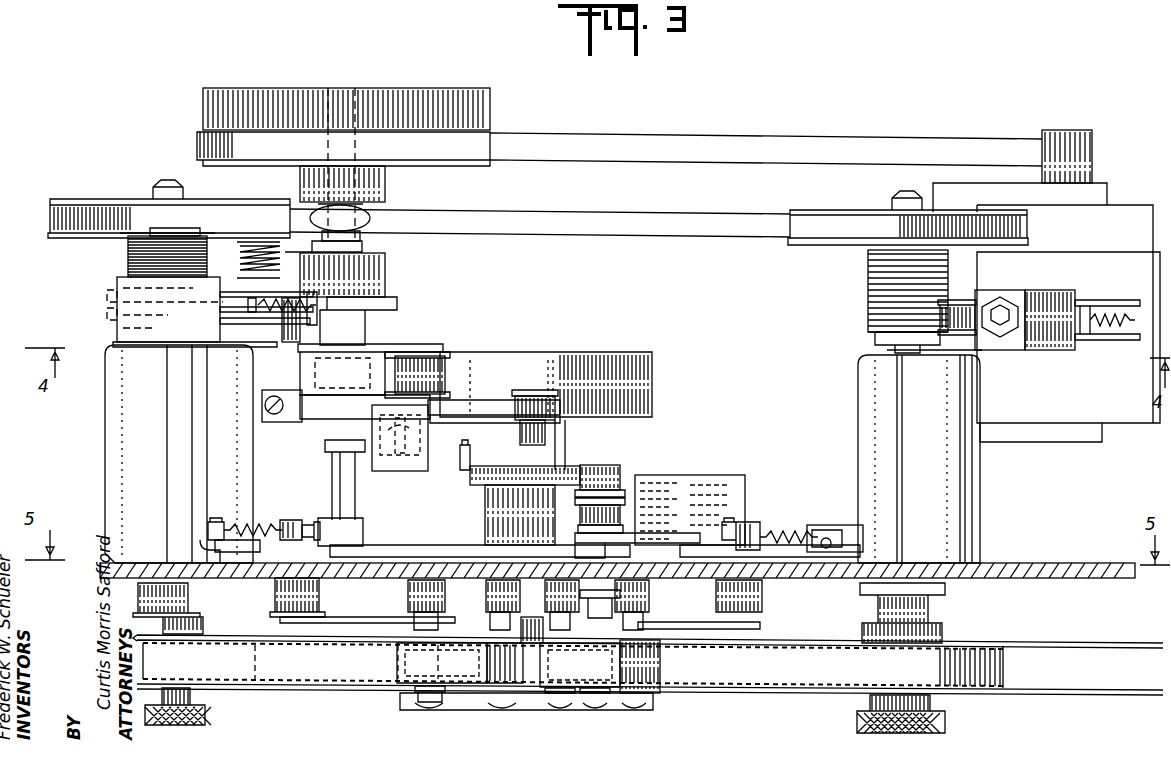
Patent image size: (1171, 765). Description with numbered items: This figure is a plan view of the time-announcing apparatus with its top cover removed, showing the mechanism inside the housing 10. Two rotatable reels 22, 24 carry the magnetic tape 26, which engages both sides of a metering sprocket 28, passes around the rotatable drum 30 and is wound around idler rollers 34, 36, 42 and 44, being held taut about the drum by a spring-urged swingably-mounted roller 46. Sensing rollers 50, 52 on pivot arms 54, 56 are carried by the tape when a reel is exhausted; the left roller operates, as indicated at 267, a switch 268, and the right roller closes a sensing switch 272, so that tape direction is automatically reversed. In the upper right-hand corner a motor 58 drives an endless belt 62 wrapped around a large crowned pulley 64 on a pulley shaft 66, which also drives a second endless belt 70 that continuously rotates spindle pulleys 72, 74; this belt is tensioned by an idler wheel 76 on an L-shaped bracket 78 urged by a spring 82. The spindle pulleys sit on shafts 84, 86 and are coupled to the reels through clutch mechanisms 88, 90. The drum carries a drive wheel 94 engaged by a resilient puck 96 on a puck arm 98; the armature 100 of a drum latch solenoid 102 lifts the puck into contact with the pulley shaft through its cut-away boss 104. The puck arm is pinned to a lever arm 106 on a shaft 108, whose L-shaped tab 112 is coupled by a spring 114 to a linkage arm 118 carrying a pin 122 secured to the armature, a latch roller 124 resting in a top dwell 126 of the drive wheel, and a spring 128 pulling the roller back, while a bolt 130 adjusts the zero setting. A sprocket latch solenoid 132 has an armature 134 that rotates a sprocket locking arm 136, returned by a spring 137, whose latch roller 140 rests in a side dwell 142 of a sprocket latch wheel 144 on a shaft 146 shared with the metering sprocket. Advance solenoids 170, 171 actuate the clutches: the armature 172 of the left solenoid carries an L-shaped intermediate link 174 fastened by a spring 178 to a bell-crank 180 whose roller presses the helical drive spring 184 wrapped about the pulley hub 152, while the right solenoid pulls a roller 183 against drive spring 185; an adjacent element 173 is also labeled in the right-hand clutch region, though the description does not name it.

The housing 10 is at (1053, 580).
The rotatable reel 22 is at (237, 690).
The rotatable reel 24 is at (1070, 695).
The magnetic tape 26 is at (312, 666).
The metering sprocket 28 is at (540, 690).
The rotatable drum 30 is at (416, 706).
The idler roller 34 is at (488, 702).
The idler roller 36 is at (562, 705).
The idler roller 42 is at (444, 706).
The idler roller 44 is at (626, 710).
The swingably-mounted roller 46 is at (600, 704).
The sensing roller 50 is at (403, 699).
The sensing roller 52 is at (644, 668).
The pivot arm 54 is at (362, 617).
The pivot arm 56 is at (668, 624).
The motor 58 is at (1124, 220).
The endless belt 62 is at (690, 122).
The large crowned pulley 64 is at (225, 119).
The pulley shaft 66 is at (340, 108).
The second endless belt 70 is at (651, 220).
The spindle pulley 72 is at (82, 204).
The spindle pulley 74 is at (830, 210).
The idler wheel 76 is at (365, 231).
The L-shaped bracket 78 is at (296, 251).
The spring 82 is at (236, 270).
The spindle shaft 84 is at (162, 585).
The spindle shaft 86 is at (905, 594).
The clutch mechanism 88 is at (102, 283).
The clutch mechanism 90 is at (852, 301).
The drive wheel 94 is at (608, 360).
The resilient puck 96 is at (441, 367).
The puck arm 98 is at (439, 348).
The armature 100 is at (428, 432).
The drum latch solenoid 102 is at (423, 472).
The boss 104 is at (387, 278).
The lever arm 106 is at (403, 340).
The shaft 108 is at (335, 468).
The L-shaped tab 112 is at (262, 398).
The spring 114 is at (283, 420).
The linkage arm 118 is at (545, 431).
The pin 122 is at (397, 468).
The latch roller 124 is at (515, 400).
The top dwell 126 is at (532, 389).
The spring 128 is at (468, 454).
The bolt 130 is at (265, 406).
The sprocket latch solenoid 132 is at (690, 484).
The armature 134 is at (615, 518).
The sprocket locking arm 136 is at (583, 540).
The spring 137 is at (502, 512).
The latch roller 140 is at (618, 475).
The side dwell 142 is at (578, 470).
The sprocket latch wheel 144 is at (504, 484).
The shaft 146 is at (531, 620).
The pulley hub 152 is at (170, 240).
The advance solenoid 170 is at (125, 325).
The advance solenoid 171 is at (1041, 287).
The armature 172 is at (235, 306).
The spring block 173 is at (1082, 320).
The L-shaped intermediate link 174 is at (220, 321).
The spring 178 is at (285, 342).
The bell-crank 180 is at (232, 353).
The roller 183 is at (952, 305).
The helical drive spring 184 is at (128, 249).
The drive spring 185 is at (868, 266).
The sensing roller switch operation 267 is at (266, 597).
The switch 268 is at (315, 518).
The sensing switch 272 is at (823, 521).